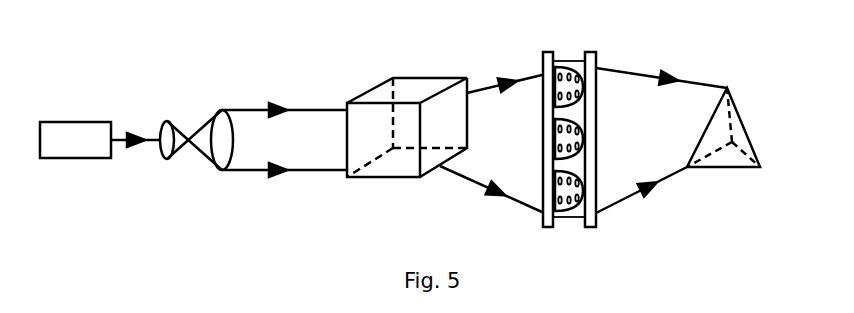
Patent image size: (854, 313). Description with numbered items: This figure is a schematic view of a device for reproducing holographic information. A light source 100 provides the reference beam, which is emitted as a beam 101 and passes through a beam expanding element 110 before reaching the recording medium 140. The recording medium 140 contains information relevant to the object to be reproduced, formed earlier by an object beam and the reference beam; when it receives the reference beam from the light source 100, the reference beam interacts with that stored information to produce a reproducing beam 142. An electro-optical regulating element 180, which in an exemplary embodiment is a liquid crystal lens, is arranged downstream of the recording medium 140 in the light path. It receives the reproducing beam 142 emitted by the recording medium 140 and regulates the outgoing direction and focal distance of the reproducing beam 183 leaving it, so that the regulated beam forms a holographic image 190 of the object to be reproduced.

The light source 100 is at (76, 122).
The beam expanding element 110 is at (185, 123).
The light beam 101 is at (154, 199).
The recording medium 140 is at (407, 76).
The reproducing beam 142 is at (505, 225).
The electro-optical regulating element 180 is at (573, 59).
The reproducing beam 183 is at (669, 225).
The holographic image 190 is at (733, 102).